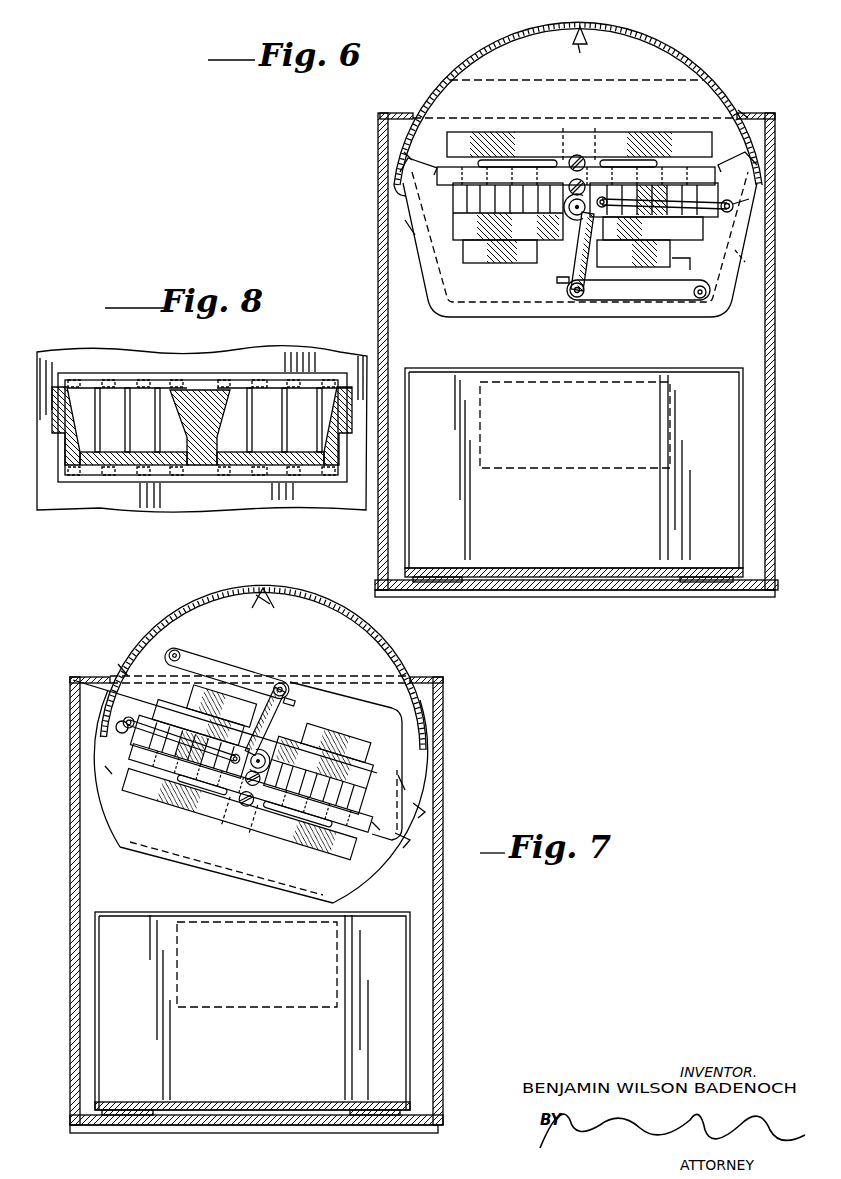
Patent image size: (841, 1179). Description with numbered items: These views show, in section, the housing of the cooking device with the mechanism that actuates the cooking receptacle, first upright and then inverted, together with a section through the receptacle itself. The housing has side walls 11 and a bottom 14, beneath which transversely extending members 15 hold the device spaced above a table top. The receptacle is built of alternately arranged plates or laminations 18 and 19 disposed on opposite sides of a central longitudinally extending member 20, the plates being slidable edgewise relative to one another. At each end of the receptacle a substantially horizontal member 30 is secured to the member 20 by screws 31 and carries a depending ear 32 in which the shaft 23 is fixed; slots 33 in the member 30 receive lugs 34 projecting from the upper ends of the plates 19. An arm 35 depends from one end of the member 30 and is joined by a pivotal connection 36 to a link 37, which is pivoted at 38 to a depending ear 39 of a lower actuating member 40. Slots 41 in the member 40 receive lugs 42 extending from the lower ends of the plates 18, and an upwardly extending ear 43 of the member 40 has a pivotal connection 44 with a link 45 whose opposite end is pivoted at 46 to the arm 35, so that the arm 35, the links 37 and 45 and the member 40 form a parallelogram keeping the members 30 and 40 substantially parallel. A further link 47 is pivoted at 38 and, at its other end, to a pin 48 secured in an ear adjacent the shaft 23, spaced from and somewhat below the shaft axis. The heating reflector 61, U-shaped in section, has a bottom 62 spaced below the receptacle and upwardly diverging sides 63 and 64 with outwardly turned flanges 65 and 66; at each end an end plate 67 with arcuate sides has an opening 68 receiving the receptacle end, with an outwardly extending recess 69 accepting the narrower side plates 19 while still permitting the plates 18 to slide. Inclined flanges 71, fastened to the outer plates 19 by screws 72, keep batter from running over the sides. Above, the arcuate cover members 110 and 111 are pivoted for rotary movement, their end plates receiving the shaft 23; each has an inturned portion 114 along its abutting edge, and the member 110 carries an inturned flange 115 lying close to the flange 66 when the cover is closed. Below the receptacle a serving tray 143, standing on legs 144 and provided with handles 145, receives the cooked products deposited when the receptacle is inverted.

In FIG. 6, the side walls 11 is at (772, 316).
In FIG. 7, the side walls 11 is at (76, 875).
In FIG. 6, the bottom 14 is at (668, 592).
In FIG. 7, the bottom 14 is at (330, 1125).
In FIG. 6, the transversely extending members 15 is at (742, 598).
In FIG. 7, the transversely extending members 15 is at (118, 1130).
In FIG. 8, the plates or laminations 18 is at (226, 385).
In FIG. 8, the plates or laminations 19 is at (160, 398).
In FIG. 8, the central longitudinally extending member 20 is at (200, 393).
In FIG. 6, the shaft 23 is at (575, 215).
In FIG. 7, the shaft 23 is at (255, 764).
In FIG. 6, the horizontal member 30 is at (520, 132).
In FIG. 7, the horizontal member 30 is at (295, 838).
In FIG. 6, the screws 31 is at (577, 160).
In FIG. 7, the screws 31 is at (243, 805).
In FIG. 6, the depending ear 32 is at (565, 200).
In FIG. 7, the depending ear 32 is at (225, 770).
In FIG. 6, the longitudinally extending slots 33 is at (480, 163).
In FIG. 7, the longitudinally extending slots 33 is at (335, 835).
In FIG. 6, the lugs 34 is at (657, 168).
In FIG. 6, the arm 35 is at (716, 222).
In FIG. 7, the arm 35 is at (150, 665).
In FIG. 6, the pivotal connection 36 is at (708, 293).
In FIG. 7, the pivotal connection 36 is at (170, 655).
In FIG. 6, the link 37 is at (625, 292).
In FIG. 7, the link 37 is at (215, 668).
In FIG. 6, the pivot 38 is at (578, 287).
In FIG. 7, the pivot 38 is at (278, 690).
In FIG. 6, the depending ear 39 is at (563, 280).
In FIG. 7, the depending ear 39 is at (258, 700).
In FIG. 6, the lower actuating member 40 is at (487, 258).
In FIG. 7, the lower actuating member 40 is at (362, 745).
In FIG. 6, the slots 41 is at (652, 275).
In FIG. 7, the slots 41 is at (200, 716).
In FIG. 6, the lugs 42 is at (682, 268).
In FIG. 7, the lugs 42 is at (130, 698).
In FIG. 6, the upwardly extending ear 43 is at (627, 176).
In FIG. 7, the upwardly extending ear 43 is at (222, 716).
In FIG. 6, the pivotal connection 44 is at (604, 200).
In FIG. 6, the link 45 is at (697, 200).
In FIG. 7, the link 45 is at (100, 733).
In FIG. 6, the pivot 46 is at (726, 205).
In FIG. 6, the link 47 is at (592, 300).
In FIG. 7, the link 47 is at (285, 730).
In FIG. 6, the pin 48 is at (590, 213).
In FIG. 7, the pin 48 is at (280, 762).
In FIG. 7, the heating shield or reflector 61 is at (346, 690).
In FIG. 6, the bottom 62 is at (490, 305).
In FIG. 6, the side 63 is at (412, 228).
In FIG. 7, the side 63 is at (402, 782).
In FIG. 6, the side 64 is at (760, 255).
In FIG. 7, the side 64 is at (122, 668).
In FIG. 6, the flange 65 is at (400, 170).
In FIG. 7, the flange 65 is at (420, 808).
In FIG. 7, the flange 66 is at (116, 727).
In FIG. 6, the end plate 67 is at (405, 253).
In FIG. 7, the end plate 67 is at (355, 895).
In FIG. 8, the opening 68 is at (72, 392).
In FIG. 8, the recess 69 is at (45, 368).
In FIG. 6, the flanges 71 is at (742, 118).
In FIG. 7, the flanges 71 is at (377, 826).
In FIG. 6, the screws 72 is at (745, 160).
In FIG. 7, the screws 72 is at (414, 839).
In FIG. 6, the cover member 110 is at (664, 47).
In FIG. 7, the cover member 110 is at (305, 600).
In FIG. 6, the cover member 111 is at (490, 47).
In FIG. 7, the cover member 111 is at (222, 600).
In FIG. 6, the inturned portion 114 is at (585, 48).
In FIG. 7, the inturned portion 114 is at (263, 598).
In FIG. 6, the inturned flange 115 is at (778, 205).
In FIG. 6, the serving tray 143 is at (598, 533).
In FIG. 7, the serving tray 143 is at (236, 1100).
In FIG. 6, the legs 144 is at (470, 588).
In FIG. 7, the legs 144 is at (388, 1118).
In FIG. 7, the handles 145 is at (313, 1010).